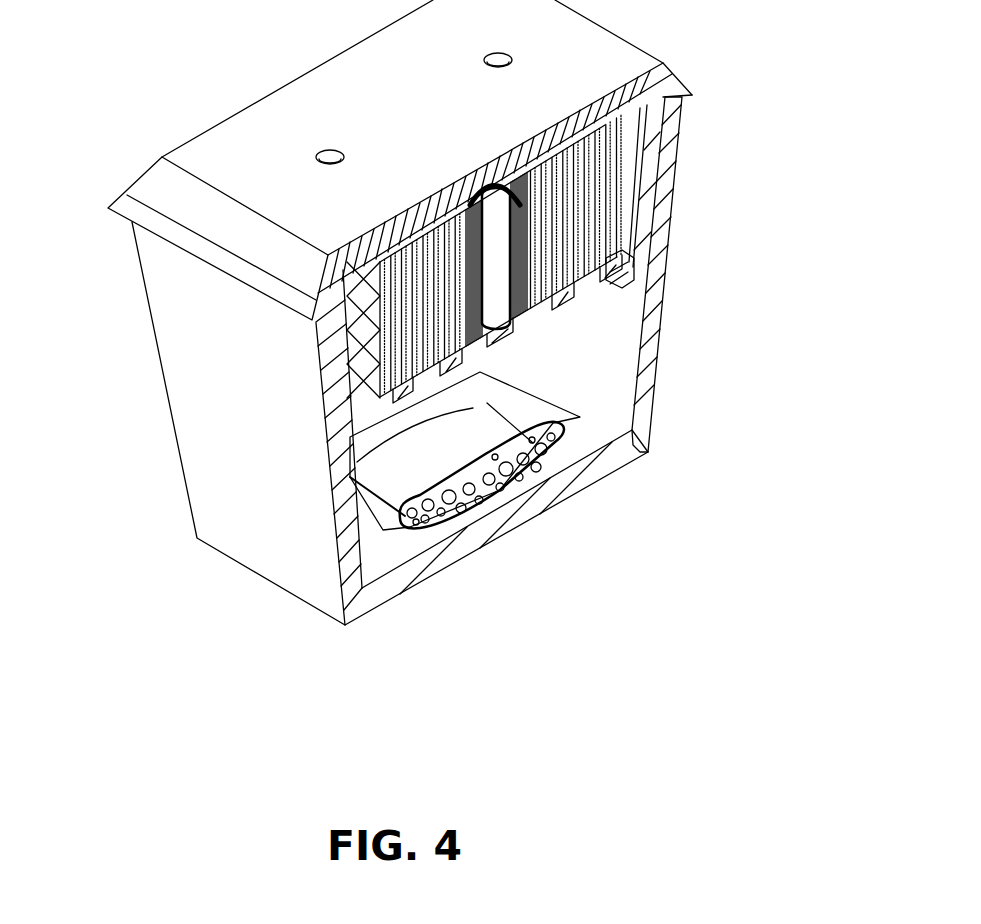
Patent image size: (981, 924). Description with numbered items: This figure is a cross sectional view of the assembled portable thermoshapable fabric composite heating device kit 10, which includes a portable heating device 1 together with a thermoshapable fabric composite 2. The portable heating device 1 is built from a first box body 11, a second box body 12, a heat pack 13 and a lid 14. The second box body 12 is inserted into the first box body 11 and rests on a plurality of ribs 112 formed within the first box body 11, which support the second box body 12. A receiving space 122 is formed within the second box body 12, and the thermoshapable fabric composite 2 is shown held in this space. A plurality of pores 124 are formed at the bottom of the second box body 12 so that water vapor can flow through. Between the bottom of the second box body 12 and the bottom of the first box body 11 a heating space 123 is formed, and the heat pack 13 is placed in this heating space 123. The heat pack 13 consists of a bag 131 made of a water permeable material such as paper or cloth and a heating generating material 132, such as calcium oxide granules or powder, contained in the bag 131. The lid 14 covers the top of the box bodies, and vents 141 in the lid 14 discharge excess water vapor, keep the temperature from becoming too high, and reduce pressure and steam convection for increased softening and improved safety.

The portable heating device 1 is at (422, 373).
The portable thermoshapable fabric composite heating device kit 10 is at (438, 394).
The first box body 11 is at (670, 117).
The second box body 12 is at (658, 166).
The receiving space 122 is at (625, 116).
The heating space 123 is at (597, 353).
The pores 124 is at (620, 284).
The ribs 112 is at (510, 357).
The heat pack 13 is at (511, 466).
The bag 131 is at (577, 425).
The heating generating material 132 is at (520, 455).
The lid 14 is at (400, 160).
The vents 141 is at (322, 148).
The thermoshapable fabric composite 2 is at (590, 214).